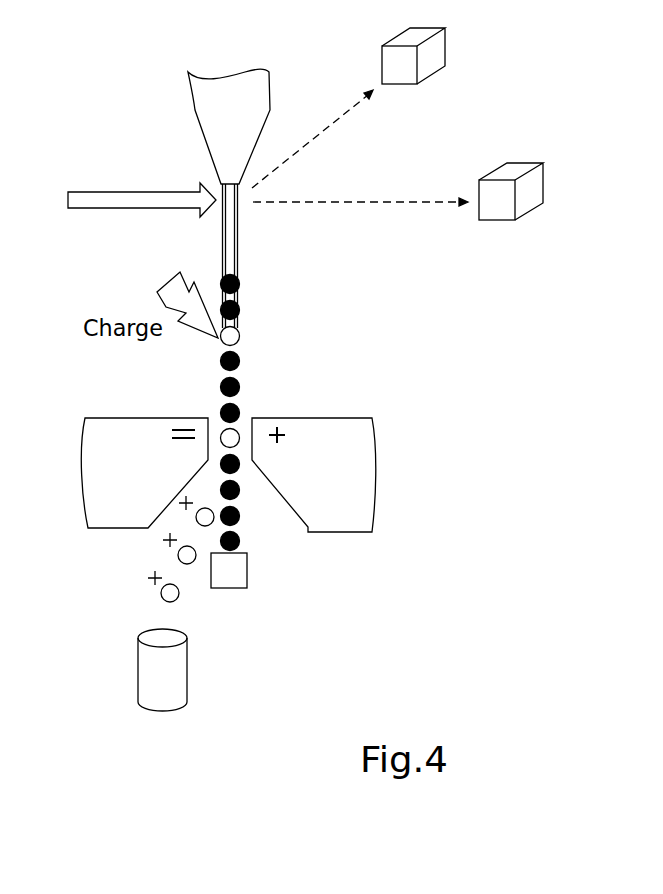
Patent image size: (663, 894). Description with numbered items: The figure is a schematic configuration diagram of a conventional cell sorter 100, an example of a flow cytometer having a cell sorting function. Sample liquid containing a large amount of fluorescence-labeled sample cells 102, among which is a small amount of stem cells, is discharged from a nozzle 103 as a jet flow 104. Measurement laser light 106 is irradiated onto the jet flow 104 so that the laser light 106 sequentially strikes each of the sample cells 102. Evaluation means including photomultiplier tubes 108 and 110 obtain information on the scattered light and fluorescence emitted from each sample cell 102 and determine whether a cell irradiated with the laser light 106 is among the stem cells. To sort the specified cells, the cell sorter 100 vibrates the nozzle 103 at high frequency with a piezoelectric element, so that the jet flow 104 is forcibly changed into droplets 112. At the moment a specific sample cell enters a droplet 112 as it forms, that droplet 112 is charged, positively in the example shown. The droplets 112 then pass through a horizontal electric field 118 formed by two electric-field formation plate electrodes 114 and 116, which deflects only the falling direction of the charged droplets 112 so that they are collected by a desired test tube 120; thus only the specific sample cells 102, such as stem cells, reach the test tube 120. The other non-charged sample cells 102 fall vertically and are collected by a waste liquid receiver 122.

The cell sorter 100 is at (78, 40).
The sample cells 102 is at (240, 282).
The nozzle 103 is at (200, 117).
The jet flow 104 is at (238, 228).
The measurement laser light 106 is at (118, 209).
The photomultiplier tube 108 is at (437, 53).
The photomultiplier tube 110 is at (535, 187).
The droplets 112 is at (240, 357).
The electric-field formation plate electrode 114 is at (114, 418).
The electric-field formation plate electrode 116 is at (333, 418).
The horizontal electric field 118 is at (214, 442).
The test tube 120 is at (187, 678).
The waste liquid receiver 122 is at (247, 571).